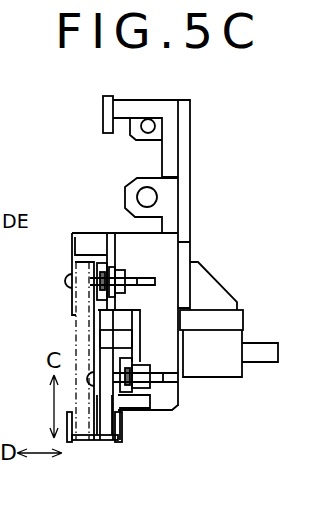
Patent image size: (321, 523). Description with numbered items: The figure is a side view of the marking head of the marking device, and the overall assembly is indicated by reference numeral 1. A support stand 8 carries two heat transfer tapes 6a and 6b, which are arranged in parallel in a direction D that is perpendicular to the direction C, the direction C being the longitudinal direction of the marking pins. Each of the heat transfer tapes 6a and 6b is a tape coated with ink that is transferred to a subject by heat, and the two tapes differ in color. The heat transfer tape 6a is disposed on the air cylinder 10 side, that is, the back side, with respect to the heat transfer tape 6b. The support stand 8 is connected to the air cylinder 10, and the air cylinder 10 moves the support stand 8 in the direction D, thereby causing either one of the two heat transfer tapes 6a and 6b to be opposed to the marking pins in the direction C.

The bracket frame 1 is at (223, 150).
The support stand 8 is at (170, 288).
The air cylinder 10 is at (212, 378).
The heat transfer tape 6a is at (105, 440).
The heat transfer tape 6b is at (80, 440).